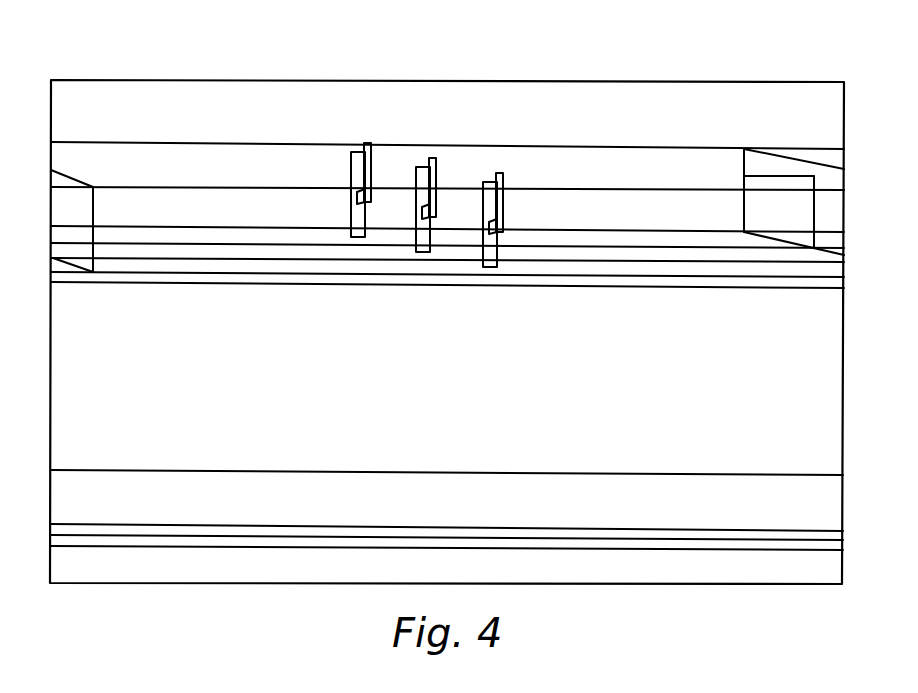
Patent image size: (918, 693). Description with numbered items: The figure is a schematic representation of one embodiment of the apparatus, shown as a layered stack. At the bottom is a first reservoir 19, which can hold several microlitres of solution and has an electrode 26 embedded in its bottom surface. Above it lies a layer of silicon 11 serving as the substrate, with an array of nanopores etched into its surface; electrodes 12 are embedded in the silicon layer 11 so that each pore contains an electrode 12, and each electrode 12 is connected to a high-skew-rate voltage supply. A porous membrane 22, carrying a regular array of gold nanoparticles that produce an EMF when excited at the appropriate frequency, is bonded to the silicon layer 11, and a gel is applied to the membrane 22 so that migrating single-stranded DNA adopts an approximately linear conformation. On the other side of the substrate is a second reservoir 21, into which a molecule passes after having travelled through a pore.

The silicon layer 11 is at (600, 229).
The electrodes 12 is at (504, 198).
The first reservoir 19 is at (190, 400).
The second reservoir 21 is at (146, 130).
The porous membrane 22 is at (293, 279).
The electrode 26 is at (442, 538).